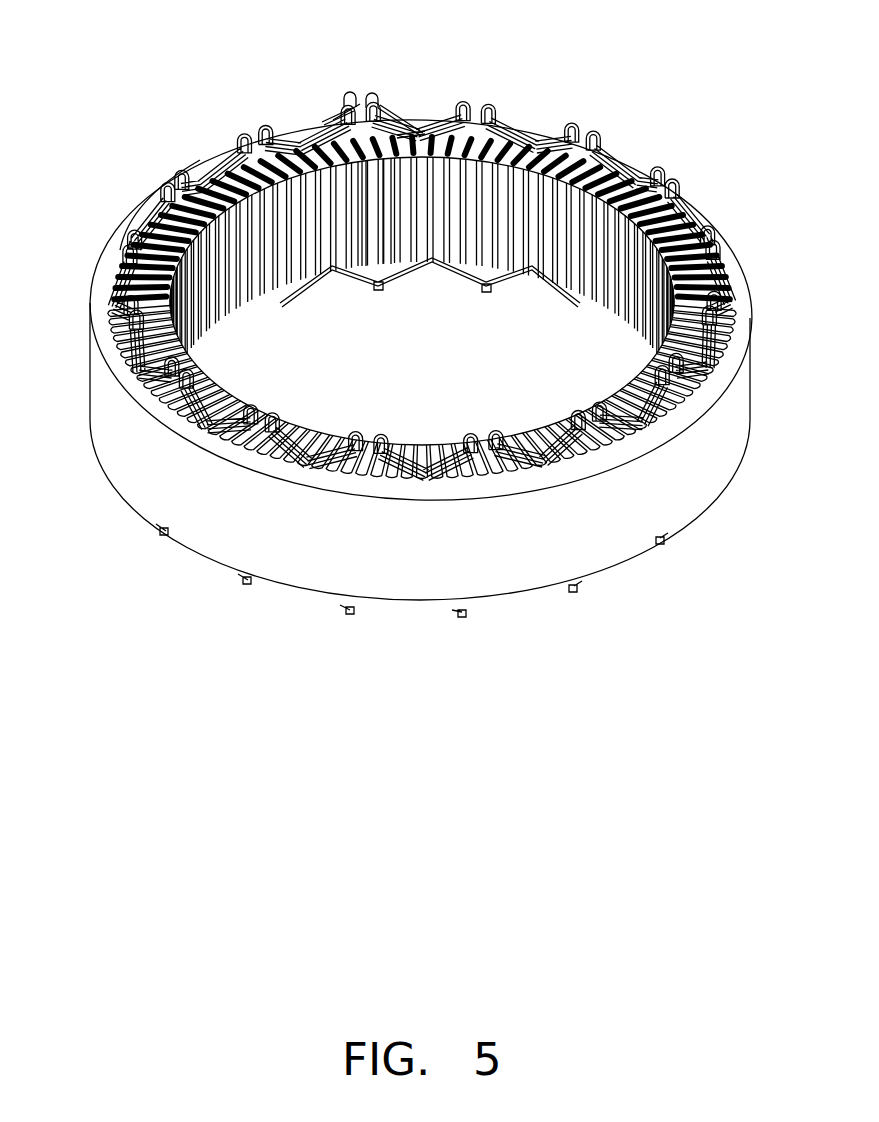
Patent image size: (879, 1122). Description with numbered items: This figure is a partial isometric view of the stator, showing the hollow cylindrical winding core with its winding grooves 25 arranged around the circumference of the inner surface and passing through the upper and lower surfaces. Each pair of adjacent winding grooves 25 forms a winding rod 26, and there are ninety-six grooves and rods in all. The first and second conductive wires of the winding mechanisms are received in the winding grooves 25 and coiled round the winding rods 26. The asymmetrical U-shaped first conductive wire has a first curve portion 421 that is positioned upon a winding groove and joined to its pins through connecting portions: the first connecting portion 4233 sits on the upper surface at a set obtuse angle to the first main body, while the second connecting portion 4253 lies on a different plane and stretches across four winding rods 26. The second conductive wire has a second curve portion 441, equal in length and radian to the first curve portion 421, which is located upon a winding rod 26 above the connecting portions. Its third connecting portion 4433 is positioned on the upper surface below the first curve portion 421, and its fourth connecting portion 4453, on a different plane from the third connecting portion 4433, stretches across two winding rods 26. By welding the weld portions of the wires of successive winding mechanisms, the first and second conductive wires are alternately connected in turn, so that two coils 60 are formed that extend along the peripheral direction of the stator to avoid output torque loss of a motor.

The coil 60 is at (150, 190).
The first connecting portion 4233 is at (327, 122).
The third connecting portion 4433 is at (333, 120).
The first curve portion 421 is at (350, 107).
The second connecting portion 4253 is at (372, 100).
The second curve portion 441 is at (395, 112).
The fourth connecting portion 4453 is at (397, 135).
The winding groove 25 is at (358, 165).
The winding rod 26 is at (387, 247).